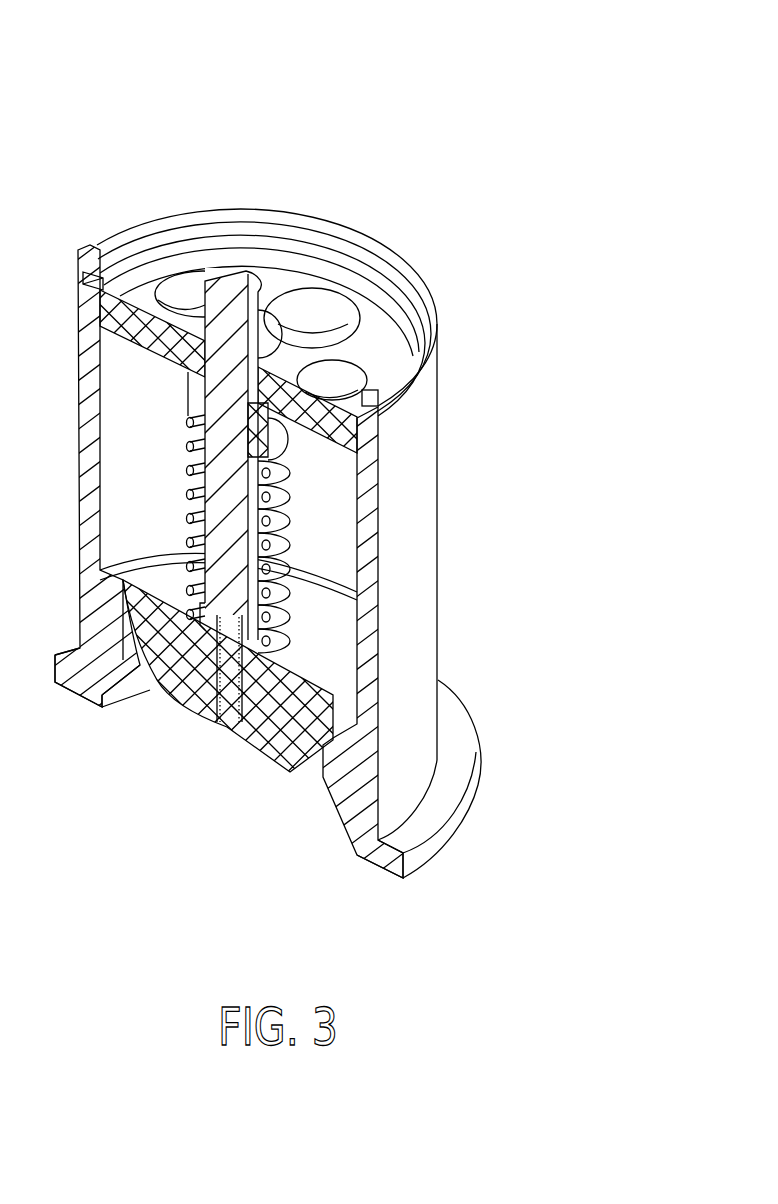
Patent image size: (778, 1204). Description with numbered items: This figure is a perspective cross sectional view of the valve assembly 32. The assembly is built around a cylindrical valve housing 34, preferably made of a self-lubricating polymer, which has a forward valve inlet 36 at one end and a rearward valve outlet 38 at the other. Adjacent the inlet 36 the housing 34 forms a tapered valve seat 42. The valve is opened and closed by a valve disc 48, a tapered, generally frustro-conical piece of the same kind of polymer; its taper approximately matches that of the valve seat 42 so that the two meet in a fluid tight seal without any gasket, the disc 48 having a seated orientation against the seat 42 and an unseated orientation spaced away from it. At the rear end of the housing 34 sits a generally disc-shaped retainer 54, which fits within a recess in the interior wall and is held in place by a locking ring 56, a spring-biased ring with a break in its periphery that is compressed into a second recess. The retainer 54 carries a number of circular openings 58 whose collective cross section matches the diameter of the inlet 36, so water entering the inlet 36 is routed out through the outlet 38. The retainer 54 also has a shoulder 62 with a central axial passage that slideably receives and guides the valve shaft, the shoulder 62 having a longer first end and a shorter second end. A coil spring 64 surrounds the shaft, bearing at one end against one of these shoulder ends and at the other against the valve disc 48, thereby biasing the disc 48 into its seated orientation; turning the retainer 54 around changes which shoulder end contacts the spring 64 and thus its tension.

The valve assembly 32 is at (535, 245).
The valve housing 34 is at (423, 542).
The valve inlet 36 is at (147, 735).
The valve outlet 38 is at (237, 117).
The valve seat 42 is at (348, 807).
The valve disc 48 is at (257, 738).
The retainer 54 is at (370, 337).
The locking ring 56 is at (103, 277).
The circular openings 58 is at (261, 333).
The shoulder 62 is at (190, 392).
The coil spring 64 is at (273, 517).